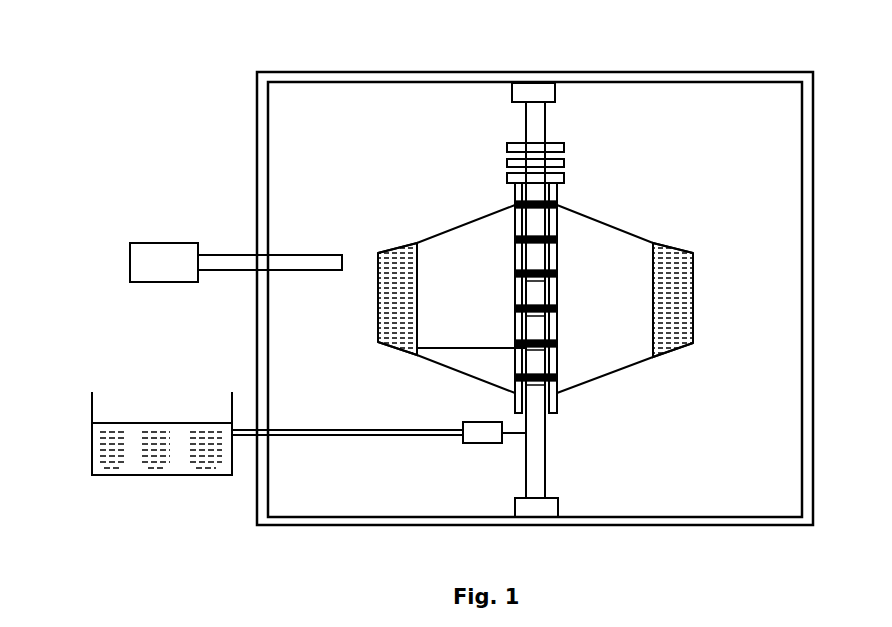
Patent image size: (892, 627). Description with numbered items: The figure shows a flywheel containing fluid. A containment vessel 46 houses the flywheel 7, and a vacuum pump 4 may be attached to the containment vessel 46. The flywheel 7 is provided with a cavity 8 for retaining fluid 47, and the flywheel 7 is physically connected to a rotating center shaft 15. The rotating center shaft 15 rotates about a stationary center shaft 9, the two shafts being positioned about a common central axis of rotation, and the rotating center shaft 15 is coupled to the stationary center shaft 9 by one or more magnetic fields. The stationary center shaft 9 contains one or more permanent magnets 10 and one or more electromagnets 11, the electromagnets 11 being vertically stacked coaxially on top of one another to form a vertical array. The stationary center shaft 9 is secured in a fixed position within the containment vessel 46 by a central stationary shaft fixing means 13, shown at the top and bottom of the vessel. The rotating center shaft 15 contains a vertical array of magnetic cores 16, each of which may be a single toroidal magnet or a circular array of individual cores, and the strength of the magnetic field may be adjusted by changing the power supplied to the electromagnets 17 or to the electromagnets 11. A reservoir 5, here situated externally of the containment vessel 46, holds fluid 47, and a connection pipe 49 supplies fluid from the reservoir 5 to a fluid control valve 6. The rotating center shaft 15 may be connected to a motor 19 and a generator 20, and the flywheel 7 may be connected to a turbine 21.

The vacuum pump 4 is at (165, 243).
The reservoir 5 is at (92, 423).
The fluid control valve 6 is at (463, 422).
The flywheel 7 is at (627, 227).
The cavity 8 is at (680, 275).
The stationary center shaft 9 is at (526, 485).
The permanent magnet 10 is at (540, 274).
The electromagnet 11 is at (552, 310).
The central stationary shaft fixing means 13 is at (513, 98).
The rotating center shaft 15 is at (557, 412).
The magnetic core 16 is at (516, 240).
The electromagnet 17 is at (515, 205).
The motor 19 is at (560, 147).
The generator 20 is at (507, 162).
The turbine 21 is at (562, 178).
The containment vessel 46 is at (740, 72).
The fluid 47 is at (195, 452).
The connection pipe 49 is at (390, 430).